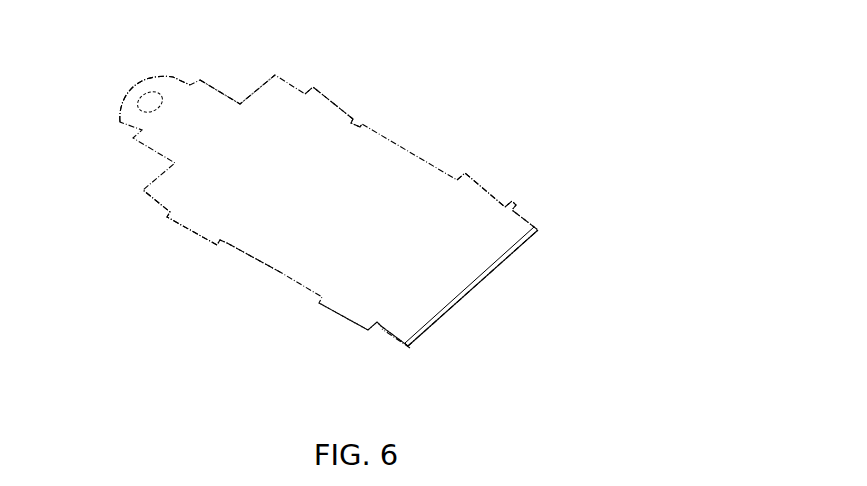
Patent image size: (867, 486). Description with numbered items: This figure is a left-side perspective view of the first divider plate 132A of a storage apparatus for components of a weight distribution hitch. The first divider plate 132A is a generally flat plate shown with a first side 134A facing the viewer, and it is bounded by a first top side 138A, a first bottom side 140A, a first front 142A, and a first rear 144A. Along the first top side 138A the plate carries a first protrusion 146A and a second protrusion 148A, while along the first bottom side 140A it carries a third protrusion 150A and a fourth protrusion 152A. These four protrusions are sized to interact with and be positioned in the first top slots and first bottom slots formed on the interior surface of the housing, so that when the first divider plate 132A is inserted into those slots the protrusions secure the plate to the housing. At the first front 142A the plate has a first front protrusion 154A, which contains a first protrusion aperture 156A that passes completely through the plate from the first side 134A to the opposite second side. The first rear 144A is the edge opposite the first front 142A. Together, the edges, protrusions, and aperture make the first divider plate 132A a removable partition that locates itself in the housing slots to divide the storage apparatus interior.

The first divider plate 132A is at (392, 290).
The first side 134A is at (498, 222).
The first top side 138A is at (360, 118).
The first bottom side 140A is at (216, 243).
The first front 142A is at (243, 104).
The first rear 144A is at (478, 282).
The first protrusion 146A is at (338, 122).
The second protrusion 148A is at (485, 197).
The third protrusion 150A is at (183, 220).
The fourth protrusion 152A is at (340, 310).
The first front protrusion 154A is at (192, 120).
The first protrusion aperture 156A is at (142, 100).